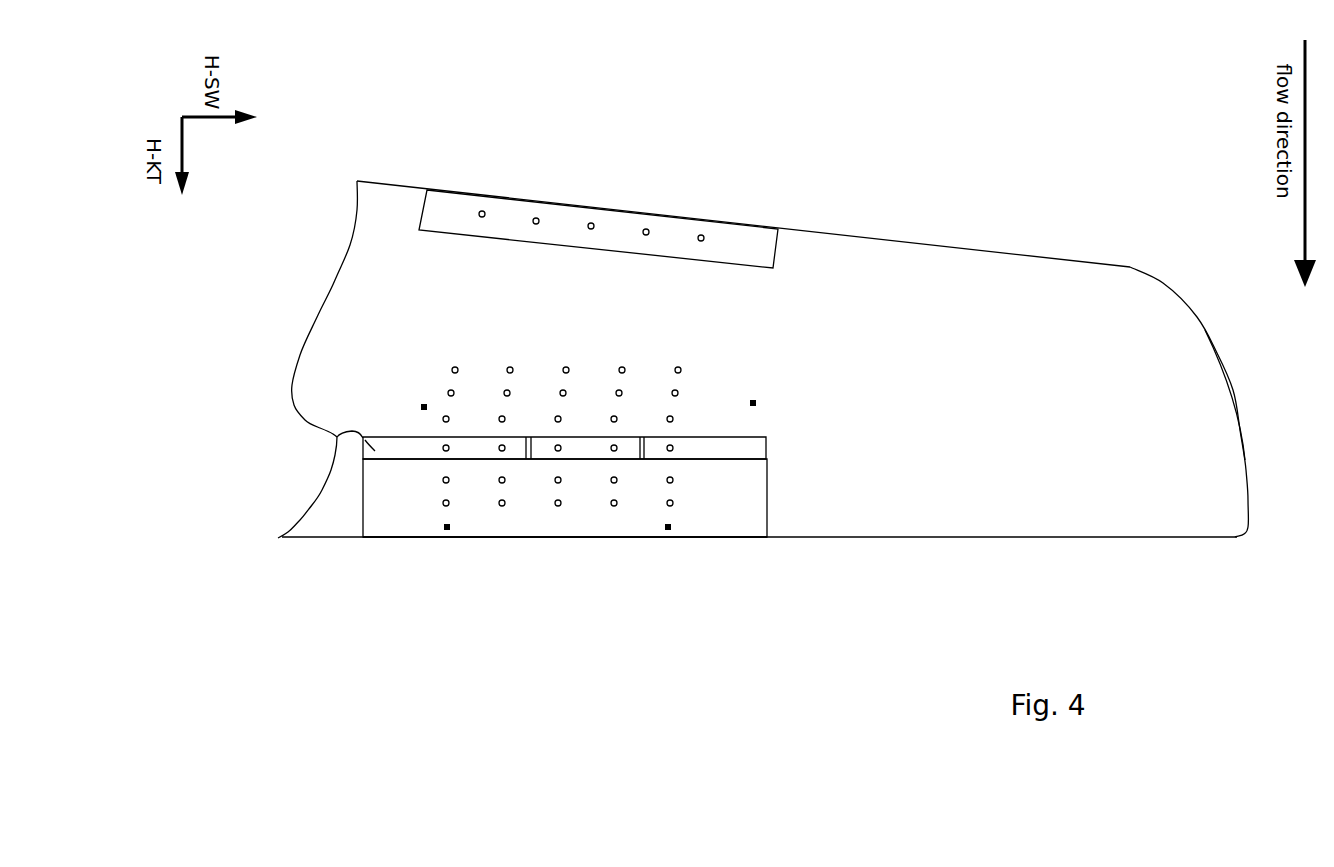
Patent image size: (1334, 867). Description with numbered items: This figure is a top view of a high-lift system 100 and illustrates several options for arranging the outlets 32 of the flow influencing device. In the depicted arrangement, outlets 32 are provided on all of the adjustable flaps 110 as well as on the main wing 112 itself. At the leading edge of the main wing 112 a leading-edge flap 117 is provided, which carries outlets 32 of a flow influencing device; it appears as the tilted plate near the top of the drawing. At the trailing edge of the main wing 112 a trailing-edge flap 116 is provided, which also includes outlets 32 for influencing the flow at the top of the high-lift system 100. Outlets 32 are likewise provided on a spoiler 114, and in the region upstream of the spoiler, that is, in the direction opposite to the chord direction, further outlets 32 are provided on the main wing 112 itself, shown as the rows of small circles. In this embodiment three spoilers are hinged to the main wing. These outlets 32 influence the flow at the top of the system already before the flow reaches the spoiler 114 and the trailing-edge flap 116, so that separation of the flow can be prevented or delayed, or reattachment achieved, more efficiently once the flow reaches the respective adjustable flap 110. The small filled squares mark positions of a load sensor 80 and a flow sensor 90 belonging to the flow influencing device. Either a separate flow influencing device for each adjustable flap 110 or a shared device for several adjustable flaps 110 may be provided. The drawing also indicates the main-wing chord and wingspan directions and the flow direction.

The high-lift system 100 is at (1002, 208).
The adjustable flap 110 is at (742, 228).
The main wing 112 is at (1113, 415).
The spoiler 114 is at (337, 437).
The trailing-edge flap 116 is at (484, 534).
The leading-edge flap 117 is at (571, 210).
The outlet 32 is at (646, 235).
The load sensor 80 is at (422, 405).
The flow sensor 90 is at (447, 530).